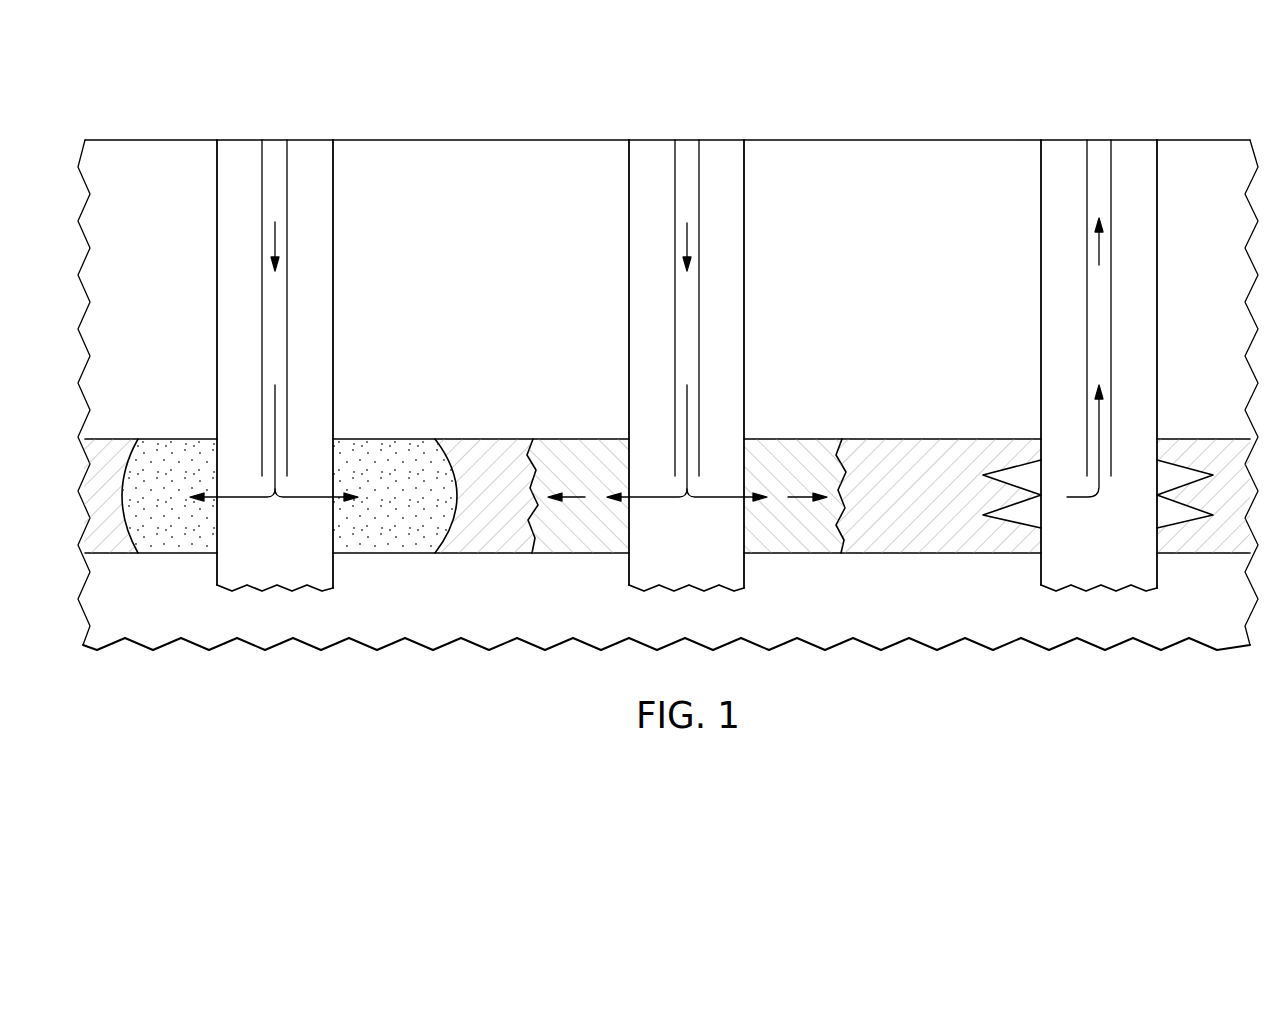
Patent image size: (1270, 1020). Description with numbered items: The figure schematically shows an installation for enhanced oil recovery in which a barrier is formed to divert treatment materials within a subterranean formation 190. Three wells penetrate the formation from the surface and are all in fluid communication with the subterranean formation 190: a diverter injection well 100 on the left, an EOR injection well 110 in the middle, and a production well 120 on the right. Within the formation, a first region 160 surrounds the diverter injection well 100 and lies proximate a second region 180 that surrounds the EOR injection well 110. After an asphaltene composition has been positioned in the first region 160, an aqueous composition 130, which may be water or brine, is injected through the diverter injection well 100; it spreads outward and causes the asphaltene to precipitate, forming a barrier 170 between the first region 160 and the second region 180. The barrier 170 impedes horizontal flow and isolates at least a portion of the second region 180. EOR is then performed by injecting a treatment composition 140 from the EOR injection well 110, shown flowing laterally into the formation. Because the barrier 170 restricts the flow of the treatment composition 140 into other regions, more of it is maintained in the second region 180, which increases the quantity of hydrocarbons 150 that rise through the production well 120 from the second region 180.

The diverter injection well 100 is at (304, 327).
The EOR injection well 110 is at (720, 327).
The production well 120 is at (1130, 327).
The aqueous composition 130 is at (277, 241).
The treatment composition 140 is at (689, 241).
The hydrocarbons 150 is at (1101, 248).
The first region 160 is at (168, 448).
The barrier 170 is at (391, 537).
The second region 180 is at (890, 537).
The subterranean formation 190 is at (108, 452).